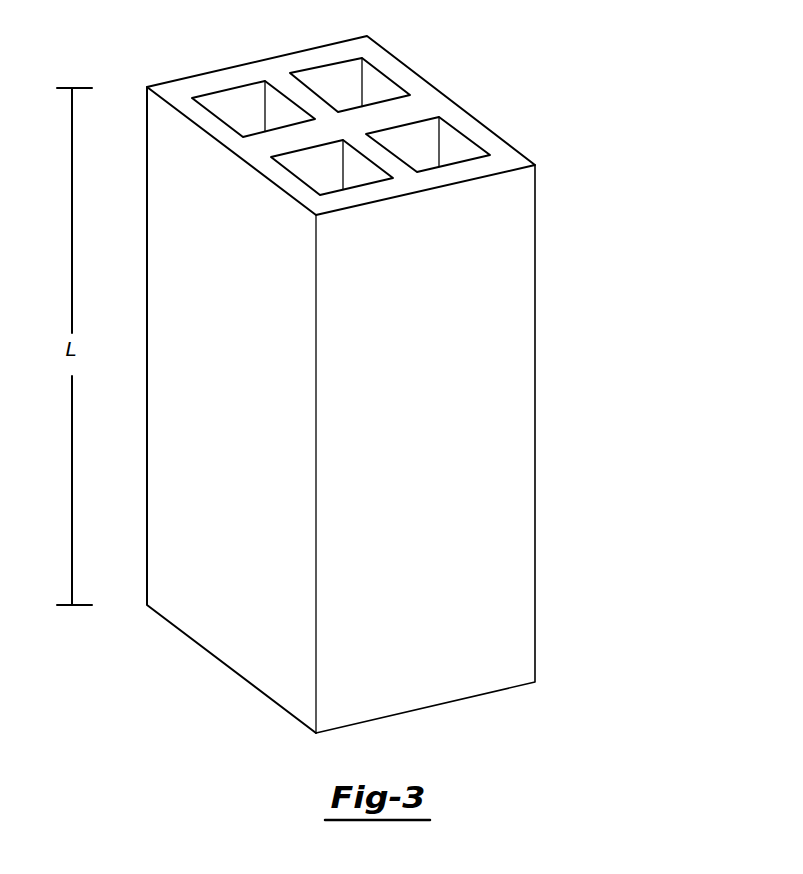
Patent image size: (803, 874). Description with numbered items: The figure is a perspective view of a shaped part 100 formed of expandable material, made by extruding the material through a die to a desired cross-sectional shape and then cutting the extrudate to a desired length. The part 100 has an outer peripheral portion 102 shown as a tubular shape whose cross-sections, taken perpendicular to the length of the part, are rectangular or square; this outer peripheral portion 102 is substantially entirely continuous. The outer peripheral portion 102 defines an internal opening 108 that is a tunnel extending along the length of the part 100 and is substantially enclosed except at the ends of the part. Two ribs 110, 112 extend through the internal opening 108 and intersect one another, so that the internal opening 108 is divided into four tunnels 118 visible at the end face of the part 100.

The part 100 is at (415, 367).
The outer peripheral portion 102 is at (518, 302).
The internal opening 108 is at (352, 83).
The rib 110 is at (407, 115).
The rib 112 is at (302, 97).
The tunnels 118 is at (225, 105).